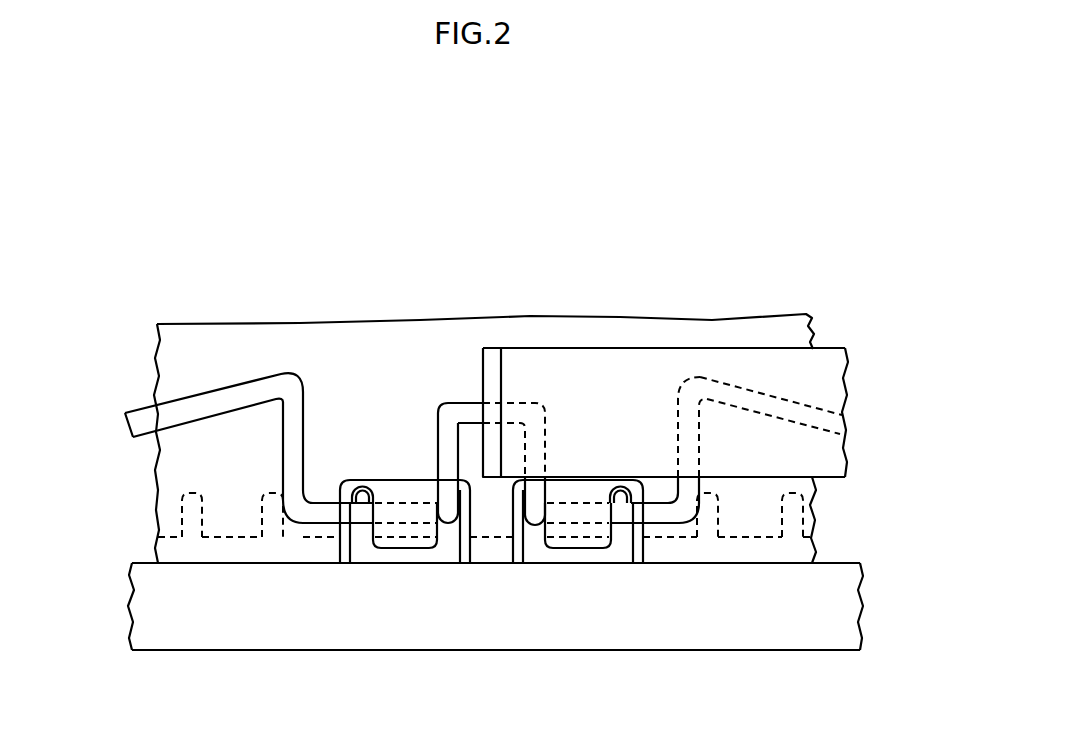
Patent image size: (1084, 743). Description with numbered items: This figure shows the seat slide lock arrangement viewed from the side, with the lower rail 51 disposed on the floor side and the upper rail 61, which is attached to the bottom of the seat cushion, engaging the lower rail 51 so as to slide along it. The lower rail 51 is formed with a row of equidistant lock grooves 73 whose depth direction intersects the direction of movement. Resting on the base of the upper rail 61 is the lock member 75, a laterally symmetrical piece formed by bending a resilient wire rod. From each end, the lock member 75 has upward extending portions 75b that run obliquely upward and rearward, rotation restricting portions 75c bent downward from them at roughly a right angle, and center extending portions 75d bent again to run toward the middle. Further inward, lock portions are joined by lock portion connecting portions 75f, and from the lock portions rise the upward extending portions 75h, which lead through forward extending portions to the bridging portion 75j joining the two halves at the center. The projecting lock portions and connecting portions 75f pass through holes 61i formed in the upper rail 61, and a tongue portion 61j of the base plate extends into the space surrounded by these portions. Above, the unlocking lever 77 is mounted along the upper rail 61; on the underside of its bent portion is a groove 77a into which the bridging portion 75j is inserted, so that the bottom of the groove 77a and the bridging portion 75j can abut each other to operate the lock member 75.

The lower rail 51 is at (730, 628).
The upper rail 61 is at (627, 322).
The holes 61i is at (410, 553).
The tongue portion 61j is at (422, 550).
The lock grooves 73 is at (260, 530).
The lock member 75 is at (509, 447).
The upward extending portions 75b is at (218, 398).
The rotation restricting portions 75c is at (293, 423).
The center extending portions 75d is at (332, 517).
The lock portion connecting portions 75f is at (393, 530).
The upward extending portions 75h is at (437, 453).
The bridging portion 75j is at (478, 371).
The unlocking lever 77 is at (651, 365).
The groove 77a is at (493, 402).